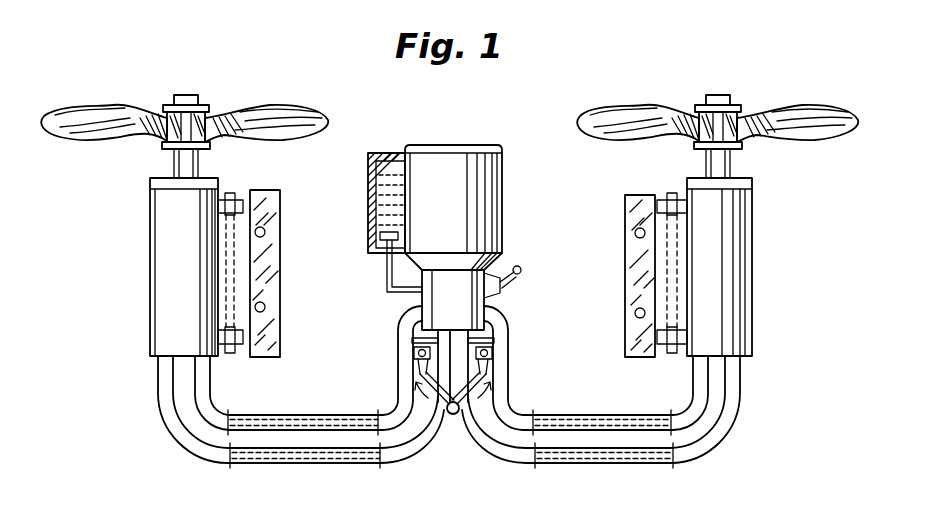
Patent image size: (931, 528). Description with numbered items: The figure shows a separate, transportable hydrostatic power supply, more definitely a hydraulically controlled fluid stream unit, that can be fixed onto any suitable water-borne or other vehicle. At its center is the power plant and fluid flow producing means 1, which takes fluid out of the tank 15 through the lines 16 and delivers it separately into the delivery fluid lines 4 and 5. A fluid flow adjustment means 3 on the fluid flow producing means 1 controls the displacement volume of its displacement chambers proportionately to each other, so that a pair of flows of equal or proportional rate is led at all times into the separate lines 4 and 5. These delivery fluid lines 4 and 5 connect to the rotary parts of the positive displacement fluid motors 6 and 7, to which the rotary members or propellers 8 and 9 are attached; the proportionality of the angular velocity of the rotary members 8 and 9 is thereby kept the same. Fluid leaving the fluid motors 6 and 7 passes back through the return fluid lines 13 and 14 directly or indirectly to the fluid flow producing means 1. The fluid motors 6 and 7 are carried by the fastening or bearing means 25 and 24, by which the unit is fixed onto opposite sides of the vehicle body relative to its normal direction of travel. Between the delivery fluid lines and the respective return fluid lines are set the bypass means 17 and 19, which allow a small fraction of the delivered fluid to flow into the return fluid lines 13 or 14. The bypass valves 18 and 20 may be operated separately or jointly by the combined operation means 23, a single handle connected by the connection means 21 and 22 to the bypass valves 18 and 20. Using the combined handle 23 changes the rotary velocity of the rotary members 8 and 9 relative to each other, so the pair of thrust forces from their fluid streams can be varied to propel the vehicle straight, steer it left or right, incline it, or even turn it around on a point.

The fluid flow producing means 1 is at (430, 155).
The fluid flow adjustment means 3 is at (517, 266).
The delivery fluid line 4 is at (643, 415).
The delivery fluid line 5 is at (255, 412).
The fluid motor 6 is at (162, 251).
The fluid motor 7 is at (730, 327).
The rotary member 8 is at (76, 110).
The rotary member 9 is at (631, 130).
The return fluid line 13 is at (652, 465).
The return fluid line 14 is at (248, 465).
The tank 15 is at (383, 200).
The line 16 is at (390, 276).
The bypass means 17 is at (497, 360).
The bypass valve 18 is at (495, 345).
The bypass means 19 is at (412, 345).
The bypass valve 20 is at (412, 358).
The connection means 21 is at (497, 375).
The connection means 22 is at (407, 377).
The combined operation means 23 is at (452, 416).
The bearing means 24 is at (632, 268).
The bearing means 25 is at (272, 263).